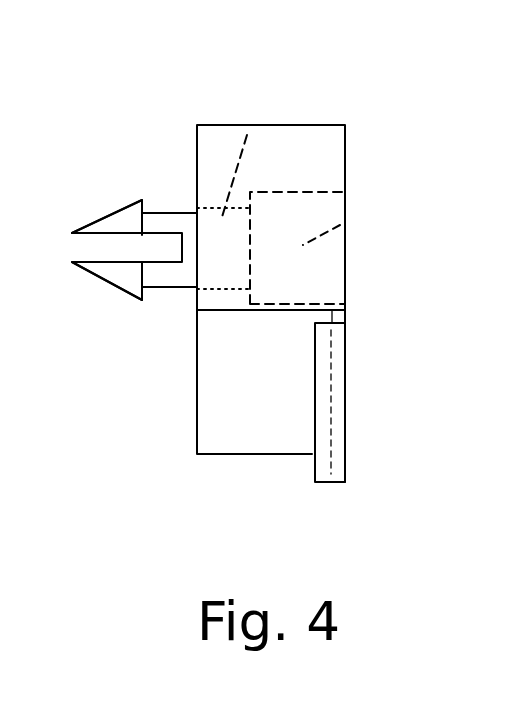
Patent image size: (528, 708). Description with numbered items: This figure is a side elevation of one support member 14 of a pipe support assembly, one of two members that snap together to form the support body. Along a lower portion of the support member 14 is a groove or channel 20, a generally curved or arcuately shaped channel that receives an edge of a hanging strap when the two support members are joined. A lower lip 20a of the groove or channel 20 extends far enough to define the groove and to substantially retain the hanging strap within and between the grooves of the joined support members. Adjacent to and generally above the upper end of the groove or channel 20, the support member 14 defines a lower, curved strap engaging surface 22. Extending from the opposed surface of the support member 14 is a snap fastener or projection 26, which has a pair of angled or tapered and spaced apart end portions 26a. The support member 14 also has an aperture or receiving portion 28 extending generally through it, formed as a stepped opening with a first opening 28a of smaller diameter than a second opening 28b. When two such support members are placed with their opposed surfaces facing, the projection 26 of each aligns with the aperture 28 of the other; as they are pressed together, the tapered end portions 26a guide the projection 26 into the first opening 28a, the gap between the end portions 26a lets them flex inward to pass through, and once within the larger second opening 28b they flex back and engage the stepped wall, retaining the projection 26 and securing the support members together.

The support member 14 is at (362, 122).
The groove or channel 20 is at (345, 312).
The lower lip 20a is at (318, 482).
The strap engaging surface 22 is at (232, 390).
The snap fastener or projection 26 is at (118, 198).
The tapered end portions 26a is at (103, 223).
The aperture or receiving portion 28 is at (337, 207).
The first opening 28a is at (247, 125).
The second opening 28b is at (345, 218).